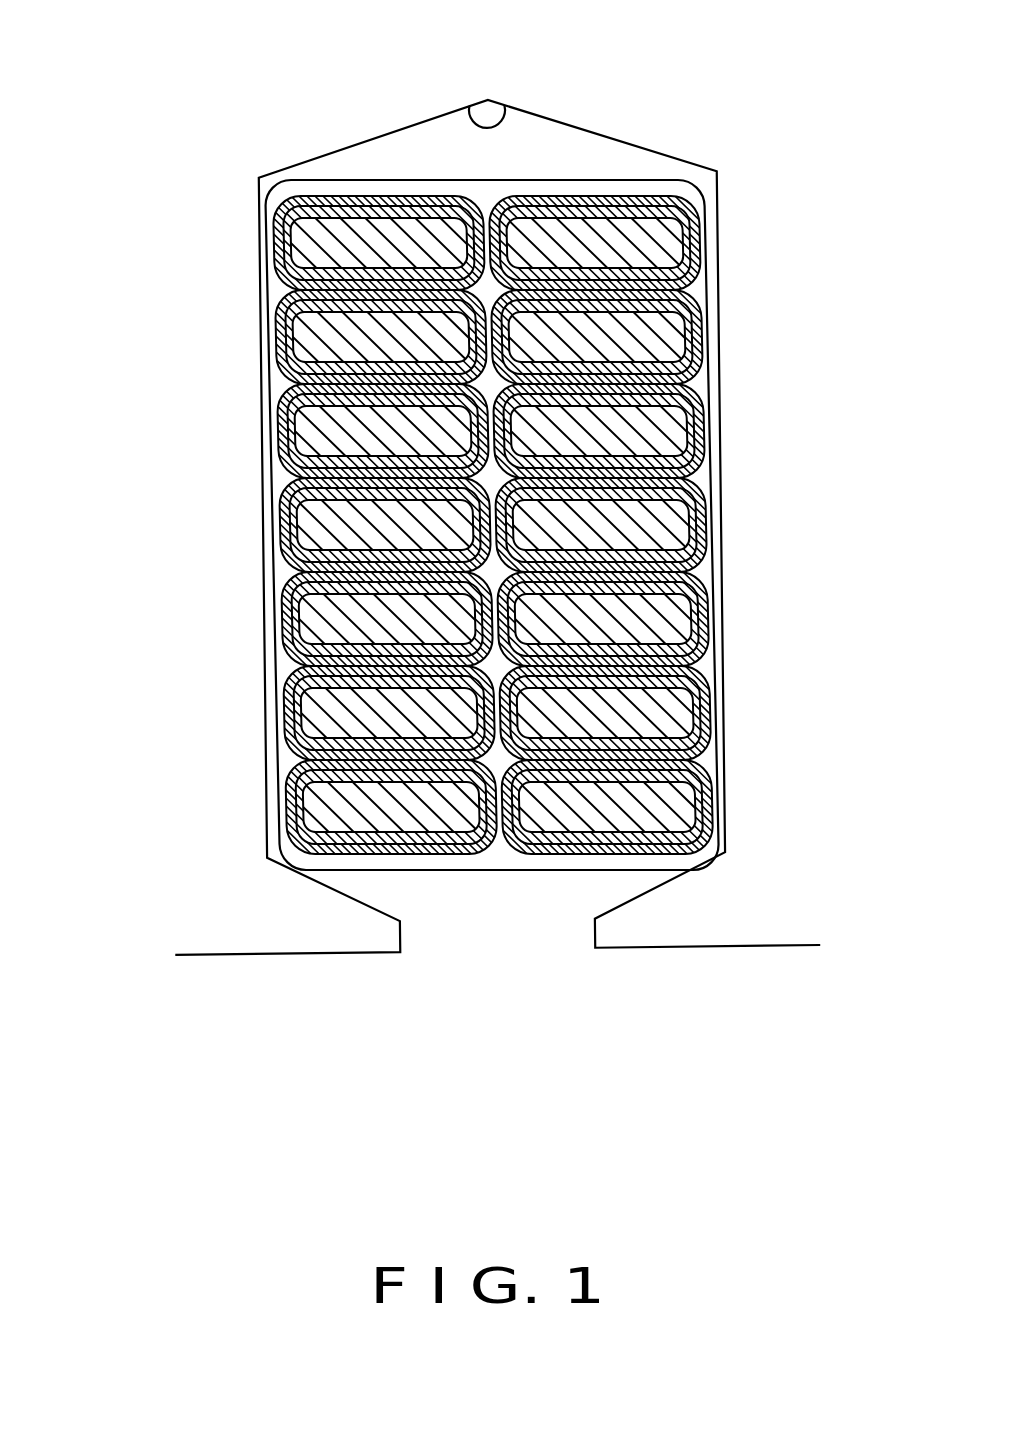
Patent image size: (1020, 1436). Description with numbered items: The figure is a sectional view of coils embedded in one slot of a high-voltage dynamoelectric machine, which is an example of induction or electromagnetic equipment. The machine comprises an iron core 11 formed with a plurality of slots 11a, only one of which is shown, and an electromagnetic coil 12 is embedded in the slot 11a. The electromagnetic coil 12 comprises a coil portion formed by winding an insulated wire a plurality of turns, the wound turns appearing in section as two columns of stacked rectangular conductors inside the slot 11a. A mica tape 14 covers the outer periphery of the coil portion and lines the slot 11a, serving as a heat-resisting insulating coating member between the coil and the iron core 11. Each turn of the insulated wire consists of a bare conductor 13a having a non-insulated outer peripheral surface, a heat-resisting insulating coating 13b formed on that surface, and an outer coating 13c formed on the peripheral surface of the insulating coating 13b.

The iron core 11 is at (232, 957).
The slot 11a is at (465, 108).
The electromagnetic coil 12 is at (607, 178).
The bare conductor 13a is at (680, 432).
The heat-resisting insulating coating 13b is at (692, 518).
The outer coating 13c is at (660, 343).
The mica tape 14 is at (722, 757).